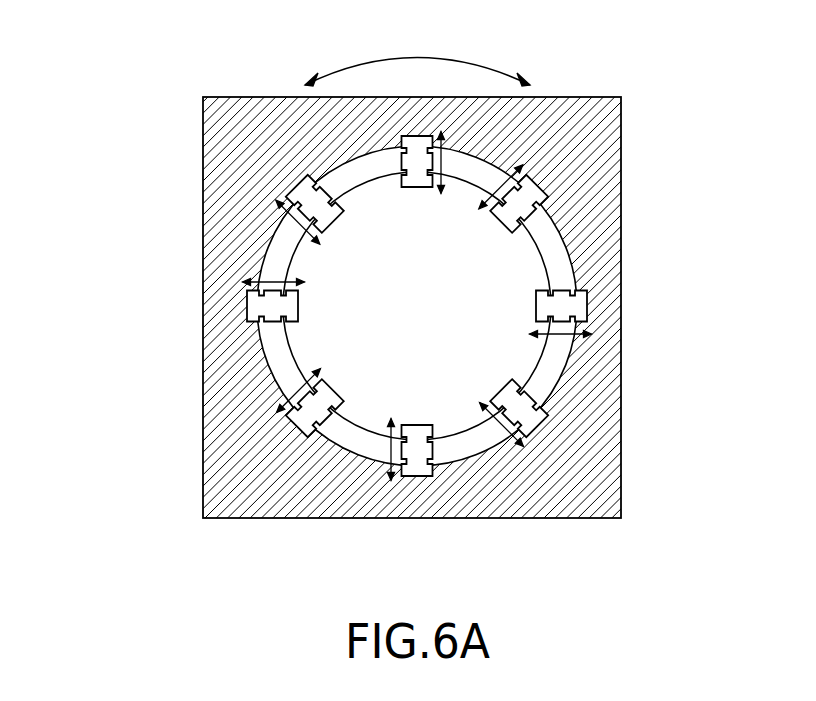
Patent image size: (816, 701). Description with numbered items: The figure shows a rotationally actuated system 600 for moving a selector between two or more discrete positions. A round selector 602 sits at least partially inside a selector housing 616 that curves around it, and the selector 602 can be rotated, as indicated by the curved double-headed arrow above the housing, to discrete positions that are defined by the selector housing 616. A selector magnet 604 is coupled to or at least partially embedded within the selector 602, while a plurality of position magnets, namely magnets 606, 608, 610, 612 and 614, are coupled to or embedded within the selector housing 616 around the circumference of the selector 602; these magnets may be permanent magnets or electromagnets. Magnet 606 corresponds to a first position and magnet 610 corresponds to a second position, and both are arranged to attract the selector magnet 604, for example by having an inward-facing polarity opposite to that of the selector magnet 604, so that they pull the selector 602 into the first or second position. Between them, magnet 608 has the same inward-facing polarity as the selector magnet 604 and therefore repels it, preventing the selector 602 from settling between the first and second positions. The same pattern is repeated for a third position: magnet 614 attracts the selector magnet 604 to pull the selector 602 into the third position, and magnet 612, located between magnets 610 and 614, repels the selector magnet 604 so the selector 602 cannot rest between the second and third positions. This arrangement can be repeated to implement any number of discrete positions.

The rotationally actuated system 600 is at (184, 49).
The selector 602 is at (522, 247).
The selector magnet 604 is at (518, 390).
The position magnet corresponding to a first position 606 is at (533, 425).
The repelling position magnet between first and second positions 608 is at (417, 478).
The position magnet corresponding to a second position 610 is at (302, 428).
The repelling position magnet between second and third positions 612 is at (248, 300).
The position magnet corresponding to a third position 614 is at (300, 192).
The selector housing 616 is at (597, 314).